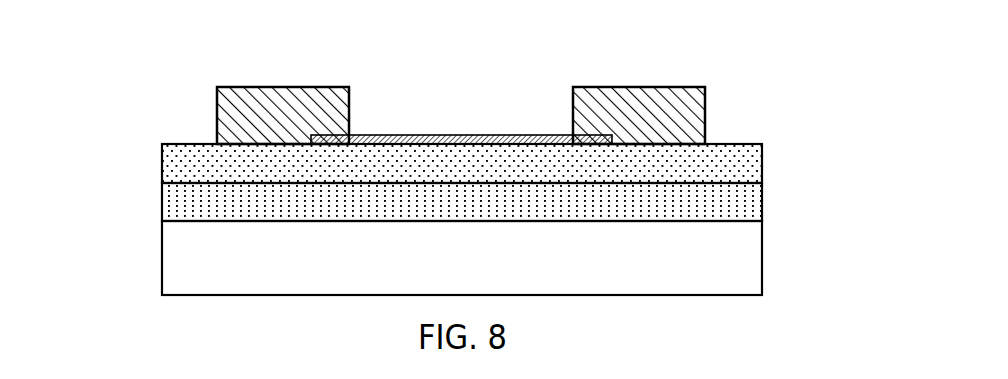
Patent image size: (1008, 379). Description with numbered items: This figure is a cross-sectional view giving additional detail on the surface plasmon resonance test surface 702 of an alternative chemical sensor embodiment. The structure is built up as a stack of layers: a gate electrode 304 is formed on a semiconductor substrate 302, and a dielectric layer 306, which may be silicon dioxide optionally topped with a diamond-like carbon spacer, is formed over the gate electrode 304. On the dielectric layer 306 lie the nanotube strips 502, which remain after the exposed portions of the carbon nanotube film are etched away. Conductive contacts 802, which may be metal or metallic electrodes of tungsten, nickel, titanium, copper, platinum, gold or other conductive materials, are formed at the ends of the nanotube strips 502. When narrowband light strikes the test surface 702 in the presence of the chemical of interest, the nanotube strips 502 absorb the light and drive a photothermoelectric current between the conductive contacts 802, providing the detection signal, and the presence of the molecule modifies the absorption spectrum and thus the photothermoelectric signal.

The semiconductor substrate 302 is at (762, 257).
The gate electrode 304 is at (162, 202).
The dielectric layer 306 is at (762, 163).
The nanotube strips 502 is at (462, 135).
The conductive contacts 802 is at (217, 120).
The surface plasmon resonance test surface 702 is at (91, 288).